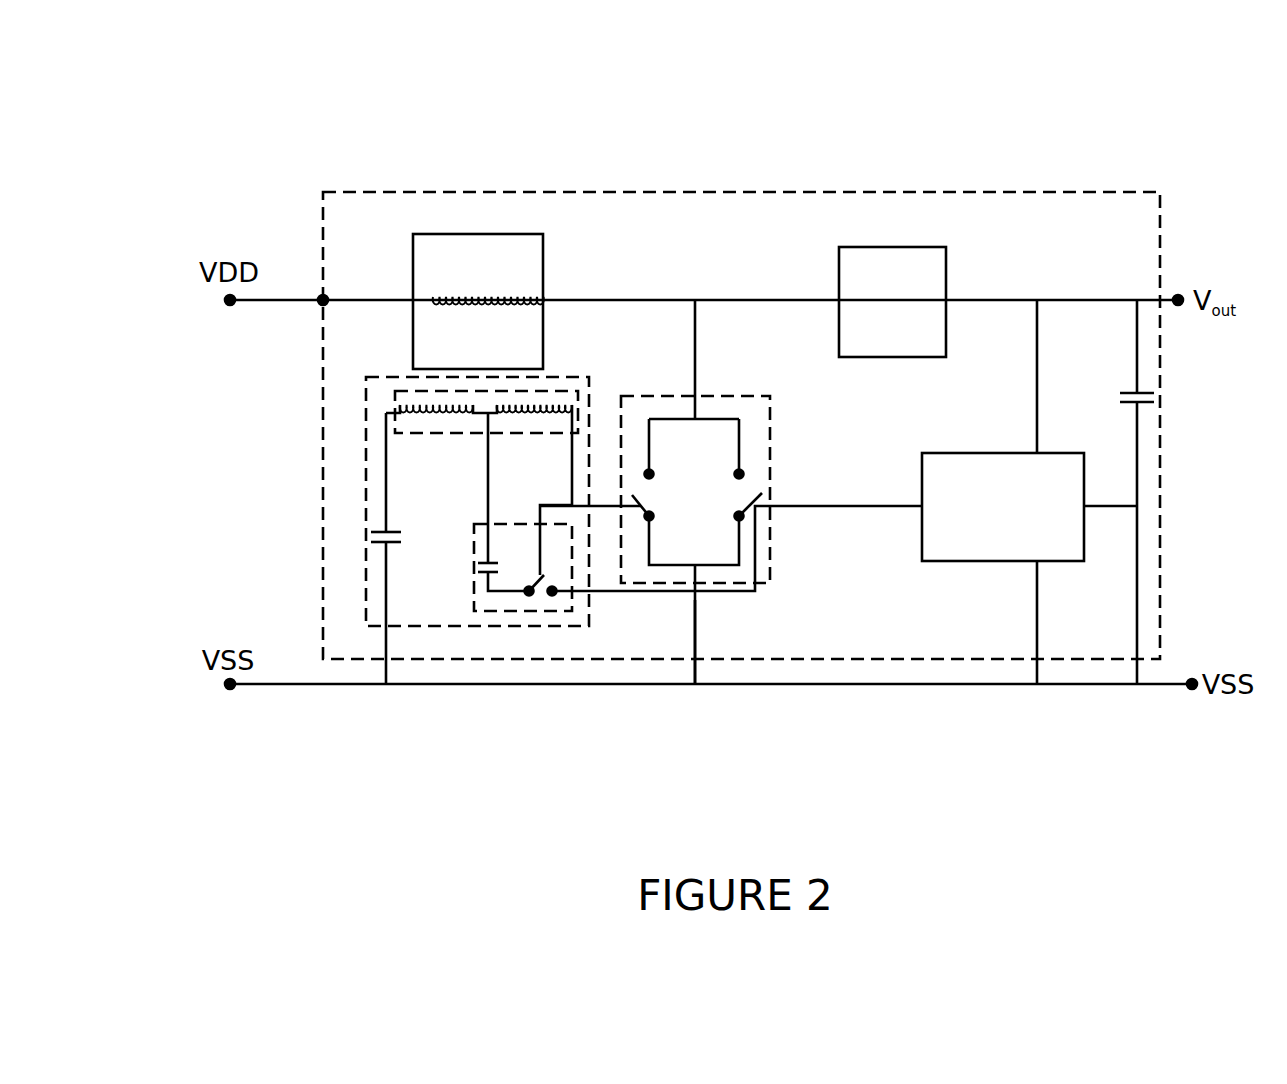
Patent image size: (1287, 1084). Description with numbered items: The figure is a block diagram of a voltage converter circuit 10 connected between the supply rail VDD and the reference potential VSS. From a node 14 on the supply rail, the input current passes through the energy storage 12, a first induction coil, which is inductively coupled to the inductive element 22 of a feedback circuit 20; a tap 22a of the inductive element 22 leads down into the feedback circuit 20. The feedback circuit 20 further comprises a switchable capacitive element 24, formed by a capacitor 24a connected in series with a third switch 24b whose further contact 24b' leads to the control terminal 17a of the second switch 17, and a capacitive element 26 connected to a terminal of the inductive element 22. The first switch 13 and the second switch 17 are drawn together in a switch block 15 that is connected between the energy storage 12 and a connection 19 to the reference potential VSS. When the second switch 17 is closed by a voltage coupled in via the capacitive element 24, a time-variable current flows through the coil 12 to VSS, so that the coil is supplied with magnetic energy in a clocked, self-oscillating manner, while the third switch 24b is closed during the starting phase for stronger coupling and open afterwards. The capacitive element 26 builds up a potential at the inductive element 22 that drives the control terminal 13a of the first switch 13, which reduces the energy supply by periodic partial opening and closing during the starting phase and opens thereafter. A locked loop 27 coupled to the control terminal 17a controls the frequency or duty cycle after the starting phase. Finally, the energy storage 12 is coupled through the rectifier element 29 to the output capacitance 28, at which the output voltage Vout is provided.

The voltage converter circuit 10 is at (876, 120).
The energy storage 12 is at (470, 234).
The first switch 13 is at (650, 516).
The control terminal of the first switch 13a is at (643, 508).
The supply voltage node 14 is at (323, 300).
The switching unit 15 is at (708, 394).
The second switch 17 is at (741, 518).
The control terminal of the second switch 17a is at (757, 506).
The ground connection 19 is at (695, 684).
The feedback circuit 20 is at (580, 377).
The inductive element 22 is at (395, 397).
The center tap 22a is at (488, 412).
The switchable capacitive element 24 is at (477, 612).
The capacitor 24a is at (493, 580).
The third switch 24b is at (556, 662).
The switch contact 24b' is at (655, 582).
The capacitive element 26 is at (392, 545).
The locked loop 27 is at (1005, 453).
The output capacitance 28 is at (1154, 396).
The rectifier element 29 is at (946, 253).